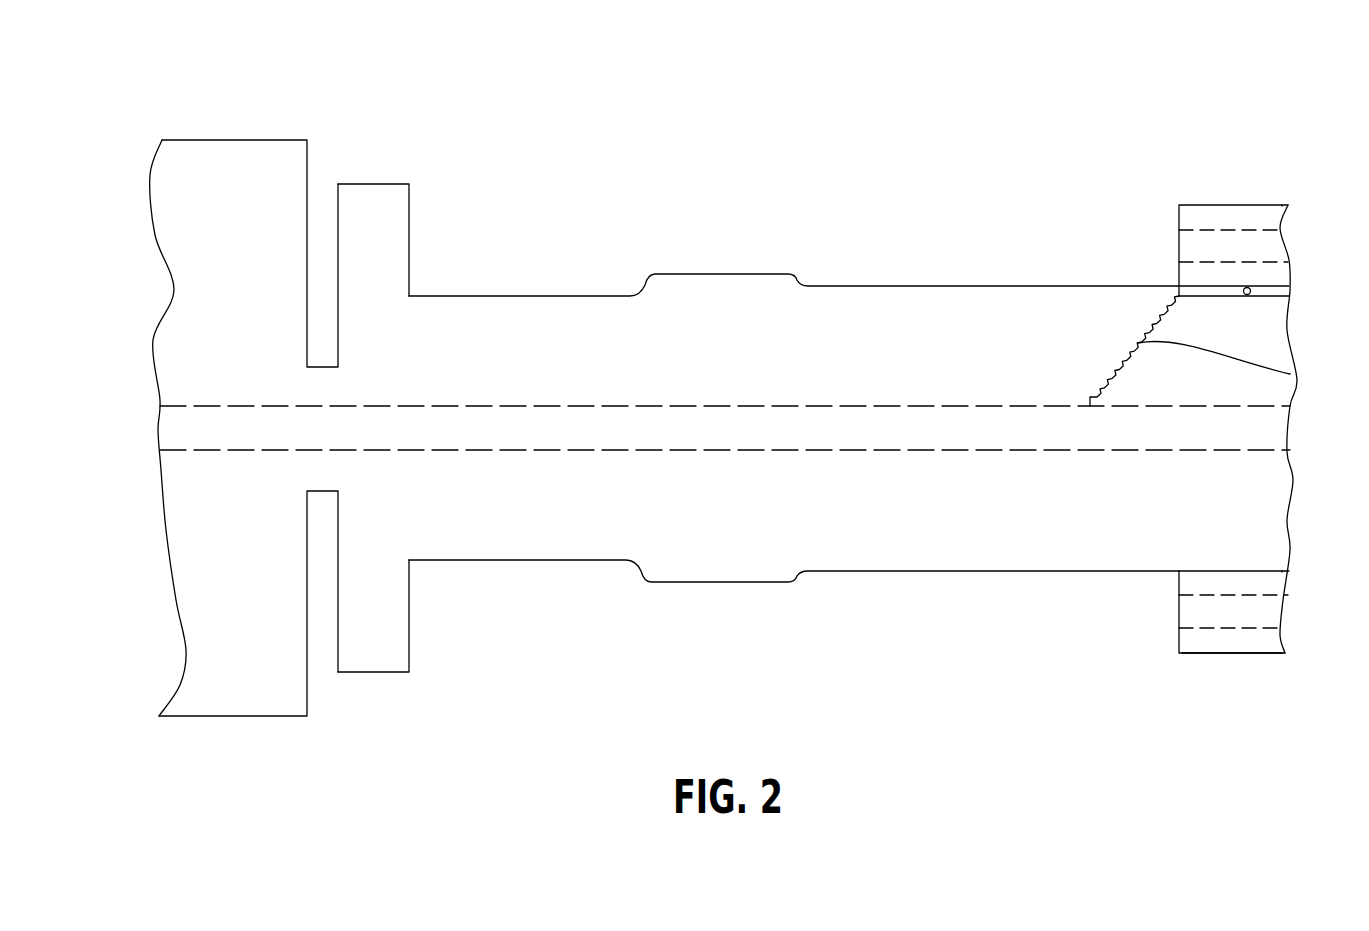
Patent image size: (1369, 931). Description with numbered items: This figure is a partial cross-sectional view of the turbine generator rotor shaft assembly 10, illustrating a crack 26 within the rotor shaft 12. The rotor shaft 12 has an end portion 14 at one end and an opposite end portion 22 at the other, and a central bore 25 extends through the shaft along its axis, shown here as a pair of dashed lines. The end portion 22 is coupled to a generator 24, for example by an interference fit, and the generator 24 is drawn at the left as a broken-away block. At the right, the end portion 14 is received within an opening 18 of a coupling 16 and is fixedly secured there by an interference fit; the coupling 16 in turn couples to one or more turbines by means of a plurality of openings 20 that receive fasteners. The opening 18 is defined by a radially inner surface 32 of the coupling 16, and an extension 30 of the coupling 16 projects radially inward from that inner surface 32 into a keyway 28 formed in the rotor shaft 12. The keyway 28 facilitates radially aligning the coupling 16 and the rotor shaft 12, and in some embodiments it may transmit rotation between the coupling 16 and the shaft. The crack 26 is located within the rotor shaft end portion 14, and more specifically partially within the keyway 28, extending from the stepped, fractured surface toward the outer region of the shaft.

The turbine generator rotor shaft assembly 10 is at (993, 120).
The rotor shaft 12 is at (862, 571).
The end portion 14 is at (1176, 482).
The coupling 16 is at (1200, 653).
The opening 18 is at (1190, 286).
The openings 20 is at (1249, 228).
The end portion 22 is at (450, 532).
The generator 24 is at (239, 177).
The central bore 25 is at (1250, 452).
The crack 26 is at (1290, 374).
The keyway 28 is at (1257, 297).
The extension 30 is at (1265, 289).
The radially inner surface 32 is at (1256, 290).